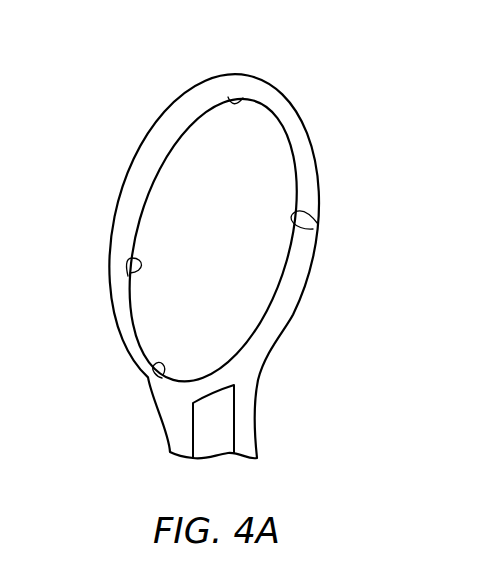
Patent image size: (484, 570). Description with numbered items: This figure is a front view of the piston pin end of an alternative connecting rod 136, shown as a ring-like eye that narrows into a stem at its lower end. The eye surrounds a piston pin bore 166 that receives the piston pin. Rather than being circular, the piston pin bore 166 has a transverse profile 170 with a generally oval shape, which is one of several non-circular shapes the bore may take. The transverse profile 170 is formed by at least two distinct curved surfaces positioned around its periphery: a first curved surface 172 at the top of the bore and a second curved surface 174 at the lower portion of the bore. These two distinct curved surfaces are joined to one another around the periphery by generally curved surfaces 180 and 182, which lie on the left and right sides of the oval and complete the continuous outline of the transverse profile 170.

The connecting rod 136 is at (231, 240).
The piston pin bore 166 is at (252, 182).
The transverse profile 170 is at (290, 266).
The first curved surface 172 is at (228, 97).
The second curved surface 174 is at (163, 375).
The generally curved surface 180 is at (130, 273).
The generally curved surface 182 is at (313, 229).